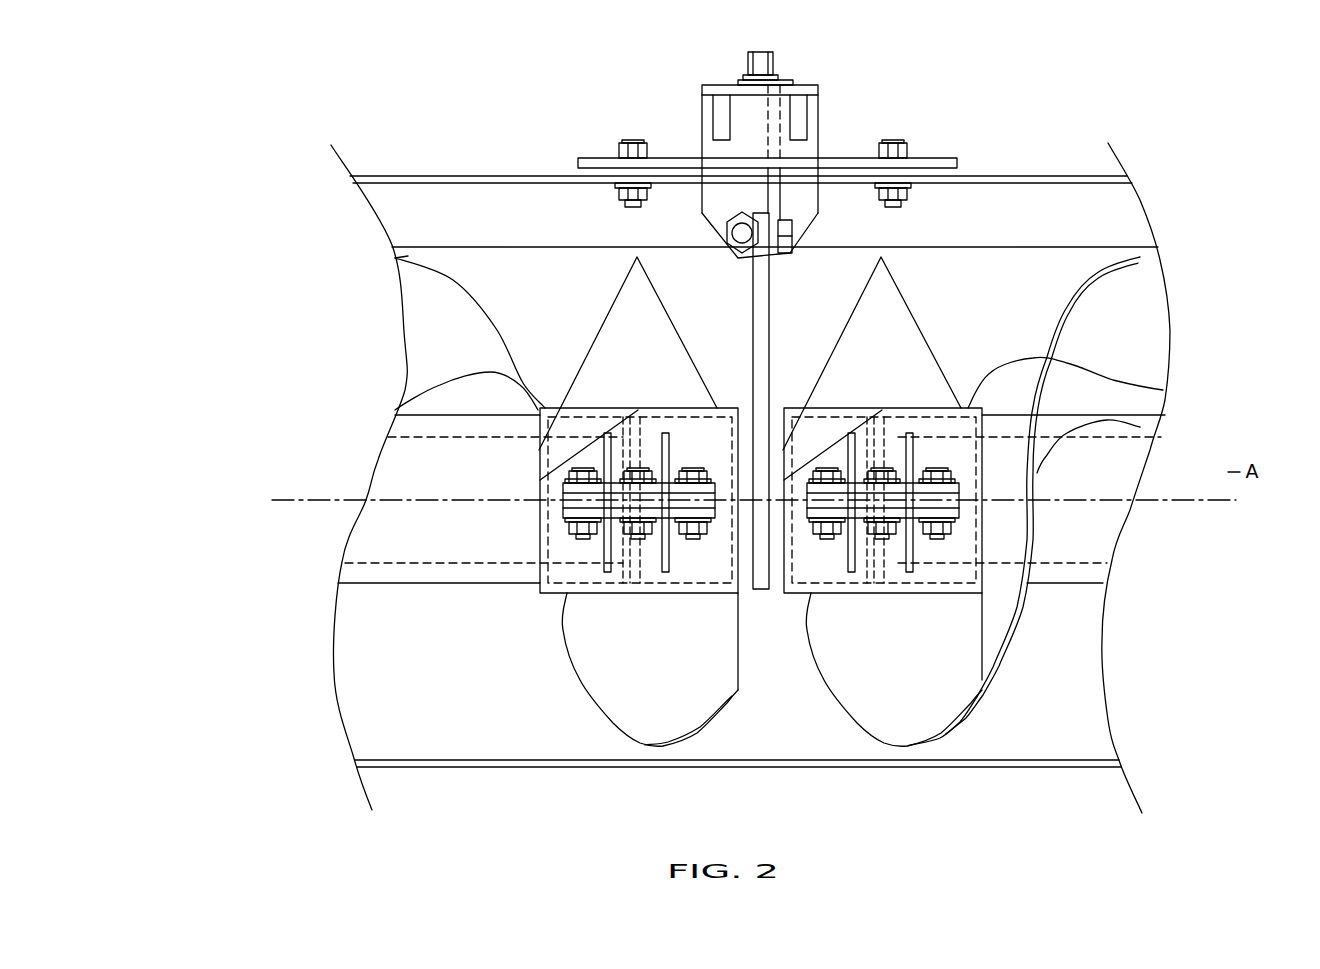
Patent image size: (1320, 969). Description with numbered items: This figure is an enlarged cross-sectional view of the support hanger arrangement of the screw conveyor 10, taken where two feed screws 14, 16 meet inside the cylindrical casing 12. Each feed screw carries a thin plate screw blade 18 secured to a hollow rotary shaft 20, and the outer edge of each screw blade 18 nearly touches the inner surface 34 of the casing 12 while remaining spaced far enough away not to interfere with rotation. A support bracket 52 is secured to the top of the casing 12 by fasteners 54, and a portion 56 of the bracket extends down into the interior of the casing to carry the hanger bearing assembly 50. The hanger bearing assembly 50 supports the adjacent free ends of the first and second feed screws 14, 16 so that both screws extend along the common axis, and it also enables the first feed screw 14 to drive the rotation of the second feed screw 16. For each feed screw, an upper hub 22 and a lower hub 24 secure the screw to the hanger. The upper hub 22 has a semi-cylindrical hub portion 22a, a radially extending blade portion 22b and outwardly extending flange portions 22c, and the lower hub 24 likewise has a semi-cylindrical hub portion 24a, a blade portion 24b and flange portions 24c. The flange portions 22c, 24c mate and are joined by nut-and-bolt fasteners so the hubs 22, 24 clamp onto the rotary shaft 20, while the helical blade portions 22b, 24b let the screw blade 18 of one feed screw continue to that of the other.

The screw conveyor 10 is at (232, 216).
The cylindrical casing 12 is at (484, 768).
The feed screw 14 is at (406, 446).
The feed screw 16 is at (1083, 551).
The screw blade 18 is at (437, 352).
The rotary shaft 20 is at (372, 572).
The upper hub 22 is at (635, 285).
The semi-cylindrical hub portion 22a is at (400, 404).
The blade portion 22b is at (663, 408).
The flange portions 22c is at (567, 483).
The lower hub 24 is at (545, 592).
The semi-cylindrical hub portion 24a is at (555, 548).
The blade portion 24b is at (653, 700).
The flange portions 24c is at (705, 565).
The inner surface 34 is at (982, 186).
The hanger bearing assembly 50 is at (773, 328).
The support bracket 52 is at (738, 110).
The fasteners 54 is at (633, 143).
The portion of the bracket 56 is at (720, 197).